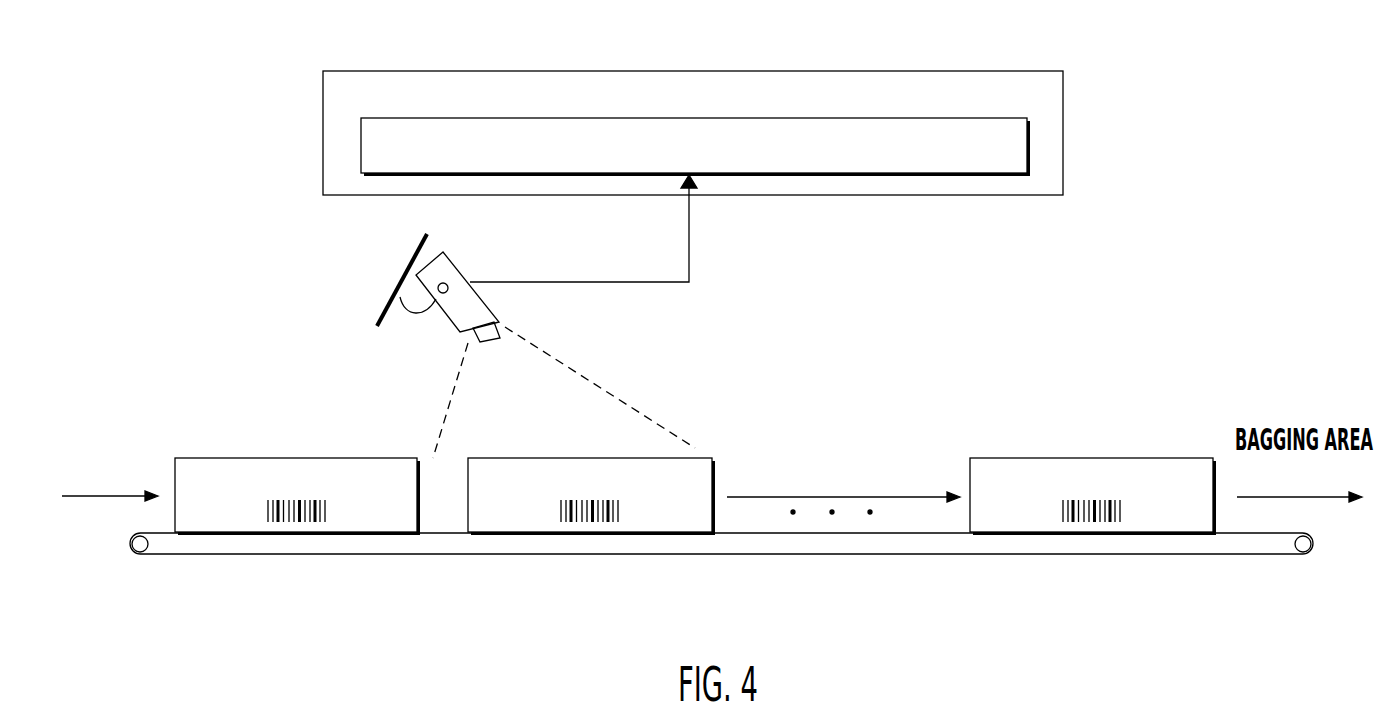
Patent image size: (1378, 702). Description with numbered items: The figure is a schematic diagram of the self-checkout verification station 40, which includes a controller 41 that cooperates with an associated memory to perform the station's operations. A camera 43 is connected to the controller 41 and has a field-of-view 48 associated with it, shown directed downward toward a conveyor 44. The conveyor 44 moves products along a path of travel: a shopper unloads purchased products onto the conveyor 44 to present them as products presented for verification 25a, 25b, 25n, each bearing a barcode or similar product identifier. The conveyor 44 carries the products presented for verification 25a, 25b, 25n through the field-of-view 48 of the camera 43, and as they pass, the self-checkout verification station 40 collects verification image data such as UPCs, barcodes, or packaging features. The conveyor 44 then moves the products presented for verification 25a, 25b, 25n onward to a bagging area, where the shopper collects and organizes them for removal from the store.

The self-checkout verification station 40 is at (430, 66).
The controller 41 is at (361, 140).
The camera 43 is at (420, 270).
The field-of-view 48 is at (440, 408).
The conveyor 44 is at (195, 547).
The product presented for verification 25a is at (340, 522).
The product presented for verification 25b is at (665, 522).
The product presented for verification 25n is at (1003, 522).